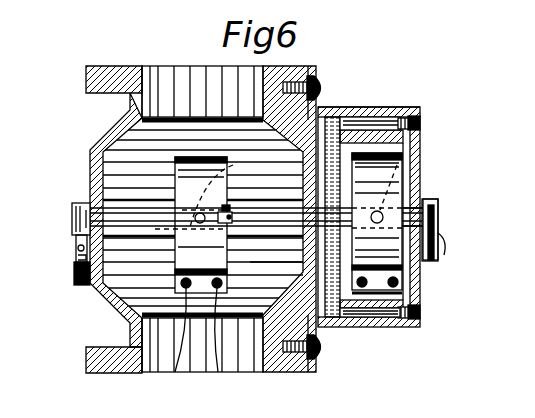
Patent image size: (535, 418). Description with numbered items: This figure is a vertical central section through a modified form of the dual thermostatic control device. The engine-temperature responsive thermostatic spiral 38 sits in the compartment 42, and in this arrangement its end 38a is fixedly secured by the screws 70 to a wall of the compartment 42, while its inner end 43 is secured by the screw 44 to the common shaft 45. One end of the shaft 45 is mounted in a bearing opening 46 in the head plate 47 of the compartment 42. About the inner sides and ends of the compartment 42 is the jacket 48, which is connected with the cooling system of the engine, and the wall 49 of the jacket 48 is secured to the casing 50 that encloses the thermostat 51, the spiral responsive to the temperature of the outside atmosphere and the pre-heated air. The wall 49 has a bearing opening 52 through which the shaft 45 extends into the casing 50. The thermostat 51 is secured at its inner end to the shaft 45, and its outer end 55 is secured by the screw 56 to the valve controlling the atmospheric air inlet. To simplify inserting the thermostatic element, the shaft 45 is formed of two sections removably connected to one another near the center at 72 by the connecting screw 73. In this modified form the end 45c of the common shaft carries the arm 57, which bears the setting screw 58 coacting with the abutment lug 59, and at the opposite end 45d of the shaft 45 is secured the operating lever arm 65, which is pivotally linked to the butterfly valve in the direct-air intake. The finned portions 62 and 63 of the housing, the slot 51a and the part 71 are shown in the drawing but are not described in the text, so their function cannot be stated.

The upper cooling fins 62 is at (183, 76).
The lower cooling fins 63 is at (160, 360).
The casing 50 is at (288, 68).
The wall 49 is at (333, 110).
The jacket 48 is at (342, 124).
The compartment 42 is at (384, 142).
The head plate 47 is at (108, 208).
The thermostatic spiral 38 is at (415, 158).
The screw 44 is at (408, 178).
The inner end 43 is at (415, 200).
The end of common shaft 45d is at (426, 203).
The operating lever arm 65 is at (444, 235).
The bearing opening 46 is at (438, 258).
The end of thermostatic spiral 38a is at (398, 283).
The screws 70 is at (376, 312).
The end of common thermostatic shaft 45c is at (80, 203).
The setting screw 58 is at (75, 248).
The arm 57 is at (76, 257).
The abutment lug 59 is at (74, 278).
The lever 71 is at (178, 231).
The thermostat 51 is at (196, 240).
The arc slot 51a is at (226, 176).
The connecting screw 73 is at (228, 206).
The shaft 45 is at (256, 215).
The shaft connection 72 is at (233, 225).
The bearing opening 52 is at (300, 240).
The outer end 55 is at (175, 372).
The screw 56 is at (218, 372).